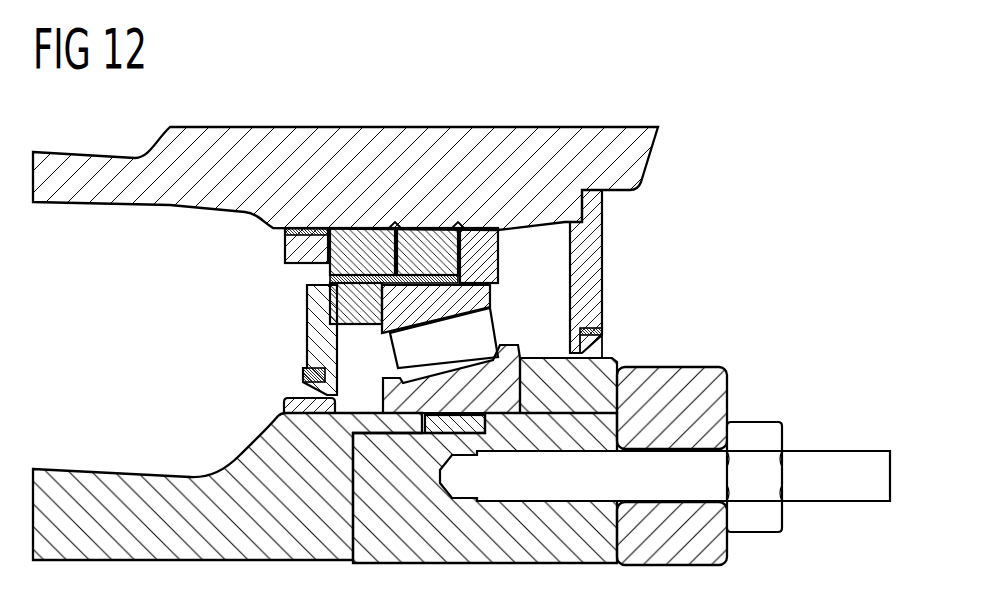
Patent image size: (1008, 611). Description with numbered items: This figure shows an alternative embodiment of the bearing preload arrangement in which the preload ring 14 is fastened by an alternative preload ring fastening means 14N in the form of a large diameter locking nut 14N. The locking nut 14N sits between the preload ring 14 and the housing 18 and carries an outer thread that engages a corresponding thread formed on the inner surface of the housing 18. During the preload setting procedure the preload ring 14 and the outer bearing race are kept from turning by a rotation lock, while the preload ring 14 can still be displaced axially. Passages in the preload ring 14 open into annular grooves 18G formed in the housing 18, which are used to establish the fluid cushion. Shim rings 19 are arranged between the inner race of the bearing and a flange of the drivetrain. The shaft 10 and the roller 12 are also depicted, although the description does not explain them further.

The shaft 10 is at (82, 480).
The tapered roller 12 is at (500, 333).
The preload ring 14 is at (492, 260).
The locking nut 14N is at (292, 266).
The housing 18 is at (503, 126).
The annular grooves 18G is at (458, 224).
The shim rings 19 is at (607, 358).